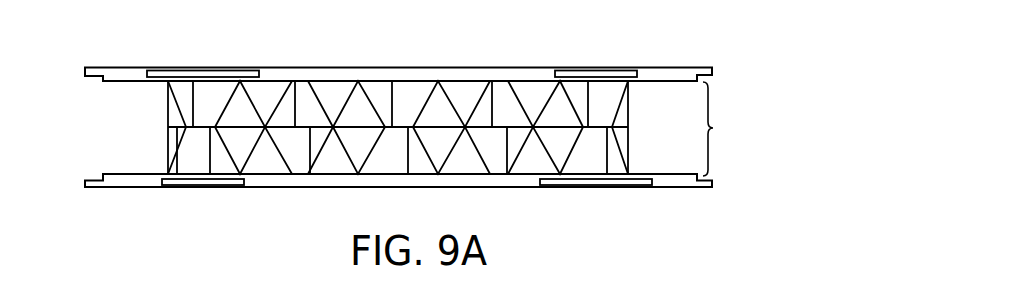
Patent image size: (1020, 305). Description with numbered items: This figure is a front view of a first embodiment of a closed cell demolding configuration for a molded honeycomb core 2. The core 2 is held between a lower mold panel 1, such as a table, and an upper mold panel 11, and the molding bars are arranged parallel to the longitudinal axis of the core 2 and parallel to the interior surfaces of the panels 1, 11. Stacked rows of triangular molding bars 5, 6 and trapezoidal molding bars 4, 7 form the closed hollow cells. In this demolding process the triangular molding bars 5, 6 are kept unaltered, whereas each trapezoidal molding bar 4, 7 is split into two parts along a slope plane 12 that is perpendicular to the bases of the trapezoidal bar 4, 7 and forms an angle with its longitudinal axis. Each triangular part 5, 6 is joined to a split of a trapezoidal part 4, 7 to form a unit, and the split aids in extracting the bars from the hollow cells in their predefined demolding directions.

The lower mold panel 1 is at (682, 183).
The core 2 is at (450, 128).
The trapezoidal molding bar 4 is at (496, 158).
The triangular molding bar 5 is at (193, 158).
The triangular molding bar 6 is at (243, 108).
The trapezoidal molding bar 7 is at (216, 100).
The upper mold panel 11 is at (683, 73).
The slope plane 12 is at (197, 100).